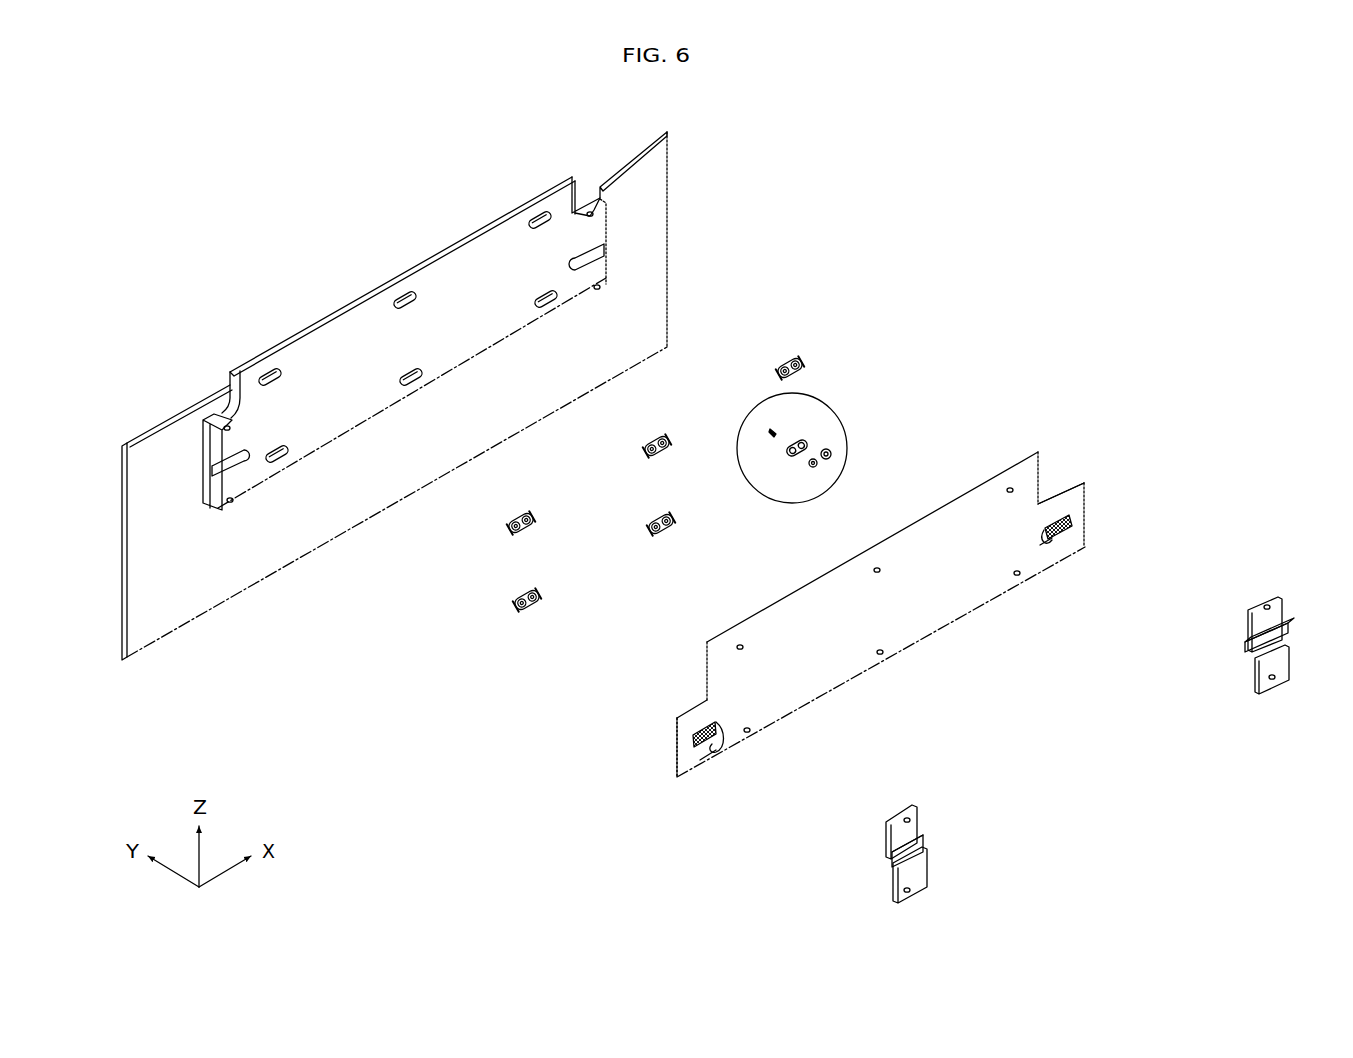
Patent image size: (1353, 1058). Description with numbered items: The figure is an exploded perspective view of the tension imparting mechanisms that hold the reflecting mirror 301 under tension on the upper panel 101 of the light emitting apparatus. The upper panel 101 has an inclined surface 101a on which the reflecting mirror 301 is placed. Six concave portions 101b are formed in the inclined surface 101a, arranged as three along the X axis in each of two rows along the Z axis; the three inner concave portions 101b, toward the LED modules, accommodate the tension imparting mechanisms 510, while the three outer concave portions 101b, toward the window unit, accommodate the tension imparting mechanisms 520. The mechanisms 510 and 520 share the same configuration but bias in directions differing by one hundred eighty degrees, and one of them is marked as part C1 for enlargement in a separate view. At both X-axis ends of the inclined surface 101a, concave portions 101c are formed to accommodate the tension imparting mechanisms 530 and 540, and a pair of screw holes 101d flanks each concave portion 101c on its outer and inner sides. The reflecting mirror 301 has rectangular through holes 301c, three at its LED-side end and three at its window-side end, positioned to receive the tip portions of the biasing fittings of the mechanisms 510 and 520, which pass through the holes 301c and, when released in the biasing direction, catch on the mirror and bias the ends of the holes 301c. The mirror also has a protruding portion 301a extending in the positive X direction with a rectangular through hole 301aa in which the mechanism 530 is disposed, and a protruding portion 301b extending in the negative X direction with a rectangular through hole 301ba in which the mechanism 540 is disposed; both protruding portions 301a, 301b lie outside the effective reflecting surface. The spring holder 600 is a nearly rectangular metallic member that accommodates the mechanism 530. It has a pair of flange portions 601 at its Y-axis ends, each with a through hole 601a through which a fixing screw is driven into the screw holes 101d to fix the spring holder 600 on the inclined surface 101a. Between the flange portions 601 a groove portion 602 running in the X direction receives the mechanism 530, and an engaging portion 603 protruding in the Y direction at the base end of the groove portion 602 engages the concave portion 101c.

The upper panel 101 is at (650, 197).
The inclined surface 101a is at (468, 253).
The concave portions 101b is at (272, 368).
The concave portions 101c is at (215, 465).
The screw holes 101d is at (590, 211).
The tension imparting mechanism 510 is at (777, 481).
The tension imparting mechanism 520 is at (797, 359).
The part C1 is at (835, 415).
The reflecting mirror 301 is at (993, 488).
The protruding portion 301a is at (1078, 487).
The through hole 301aa is at (1046, 548).
The protruding portion 301b is at (680, 760).
The through hole 301ba is at (710, 752).
The through holes 301c is at (758, 733).
The tension imparting mechanism 530 is at (1057, 513).
The tension imparting mechanism 540 is at (696, 725).
The spring holder 600 is at (1054, 726).
The flange portions 601 is at (920, 815).
The through holes 601a is at (904, 820).
The groove portion 602 is at (895, 852).
The engaging portion 603 is at (1250, 645).